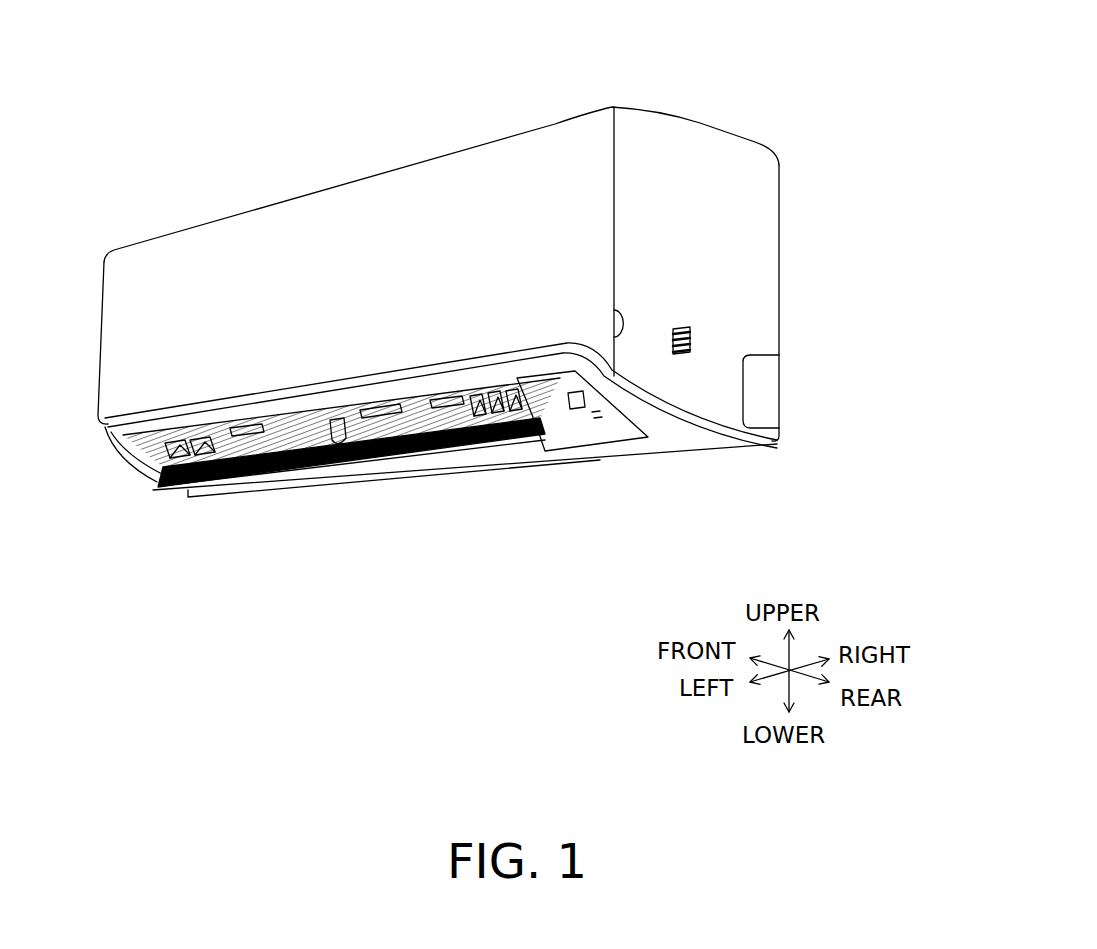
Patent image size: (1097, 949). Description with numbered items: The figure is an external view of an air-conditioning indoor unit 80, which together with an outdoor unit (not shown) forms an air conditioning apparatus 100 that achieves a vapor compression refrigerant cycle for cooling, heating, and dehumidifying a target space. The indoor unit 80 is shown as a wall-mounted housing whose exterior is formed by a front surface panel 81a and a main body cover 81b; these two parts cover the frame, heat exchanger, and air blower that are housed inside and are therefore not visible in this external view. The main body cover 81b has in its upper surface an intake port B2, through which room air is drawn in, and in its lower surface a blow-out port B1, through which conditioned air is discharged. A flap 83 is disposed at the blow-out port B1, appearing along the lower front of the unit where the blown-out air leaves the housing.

The air conditioning apparatus 100 is at (799, 117).
The air-conditioning indoor unit 80 is at (708, 108).
The front surface panel 81a is at (187, 256).
The main body cover 81b is at (757, 235).
The flap 83 is at (550, 446).
The blow-out port B1 is at (287, 472).
The intake port B2 is at (352, 148).